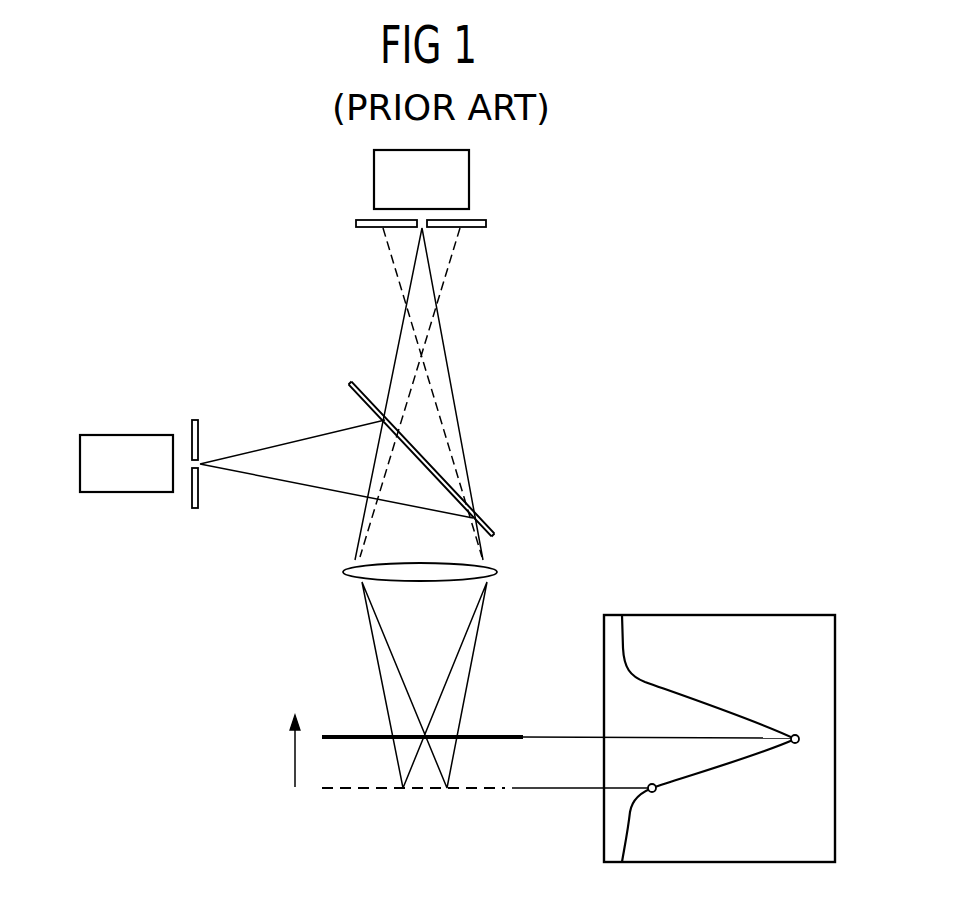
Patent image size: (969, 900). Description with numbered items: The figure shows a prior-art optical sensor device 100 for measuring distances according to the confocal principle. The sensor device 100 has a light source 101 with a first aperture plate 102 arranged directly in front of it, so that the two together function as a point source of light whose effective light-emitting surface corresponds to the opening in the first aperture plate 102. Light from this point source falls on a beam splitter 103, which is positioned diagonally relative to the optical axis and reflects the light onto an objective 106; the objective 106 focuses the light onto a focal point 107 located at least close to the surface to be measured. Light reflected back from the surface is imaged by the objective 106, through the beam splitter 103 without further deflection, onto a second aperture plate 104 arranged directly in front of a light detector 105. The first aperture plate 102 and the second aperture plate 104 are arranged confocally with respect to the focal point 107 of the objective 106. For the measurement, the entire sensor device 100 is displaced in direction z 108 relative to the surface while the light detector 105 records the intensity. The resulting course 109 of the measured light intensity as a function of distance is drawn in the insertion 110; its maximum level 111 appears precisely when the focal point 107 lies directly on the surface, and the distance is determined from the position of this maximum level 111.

The sensor device 100 is at (685, 262).
The light source 101 is at (120, 435).
The first aperture plate 102 is at (195, 510).
The beam splitter 103 is at (353, 383).
The second aperture plate 104 is at (486, 220).
The light detector 105 is at (374, 180).
The objective 106 is at (497, 572).
The focal point 107 is at (424, 728).
The direction z 108 is at (295, 761).
The course of the measured light intensity 109 is at (735, 712).
The insertion 110 is at (730, 613).
The maximum level 111 is at (794, 745).